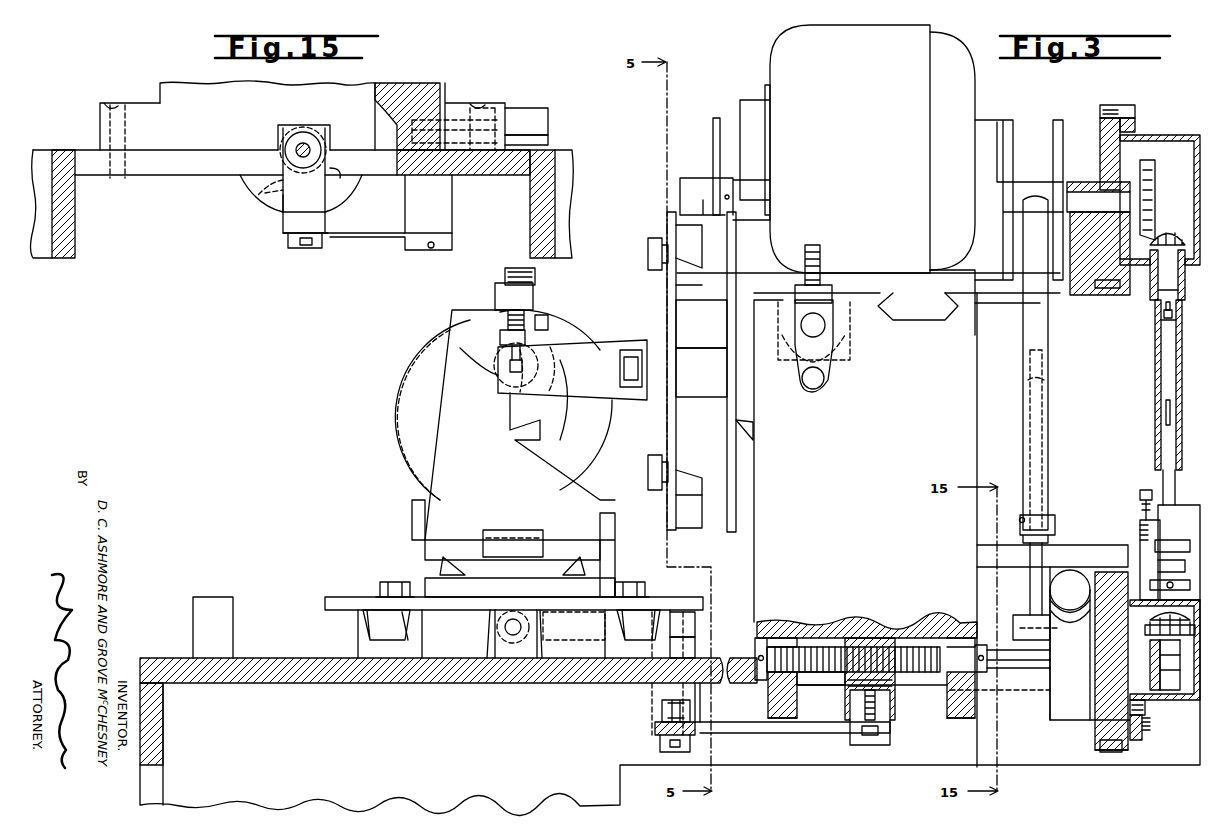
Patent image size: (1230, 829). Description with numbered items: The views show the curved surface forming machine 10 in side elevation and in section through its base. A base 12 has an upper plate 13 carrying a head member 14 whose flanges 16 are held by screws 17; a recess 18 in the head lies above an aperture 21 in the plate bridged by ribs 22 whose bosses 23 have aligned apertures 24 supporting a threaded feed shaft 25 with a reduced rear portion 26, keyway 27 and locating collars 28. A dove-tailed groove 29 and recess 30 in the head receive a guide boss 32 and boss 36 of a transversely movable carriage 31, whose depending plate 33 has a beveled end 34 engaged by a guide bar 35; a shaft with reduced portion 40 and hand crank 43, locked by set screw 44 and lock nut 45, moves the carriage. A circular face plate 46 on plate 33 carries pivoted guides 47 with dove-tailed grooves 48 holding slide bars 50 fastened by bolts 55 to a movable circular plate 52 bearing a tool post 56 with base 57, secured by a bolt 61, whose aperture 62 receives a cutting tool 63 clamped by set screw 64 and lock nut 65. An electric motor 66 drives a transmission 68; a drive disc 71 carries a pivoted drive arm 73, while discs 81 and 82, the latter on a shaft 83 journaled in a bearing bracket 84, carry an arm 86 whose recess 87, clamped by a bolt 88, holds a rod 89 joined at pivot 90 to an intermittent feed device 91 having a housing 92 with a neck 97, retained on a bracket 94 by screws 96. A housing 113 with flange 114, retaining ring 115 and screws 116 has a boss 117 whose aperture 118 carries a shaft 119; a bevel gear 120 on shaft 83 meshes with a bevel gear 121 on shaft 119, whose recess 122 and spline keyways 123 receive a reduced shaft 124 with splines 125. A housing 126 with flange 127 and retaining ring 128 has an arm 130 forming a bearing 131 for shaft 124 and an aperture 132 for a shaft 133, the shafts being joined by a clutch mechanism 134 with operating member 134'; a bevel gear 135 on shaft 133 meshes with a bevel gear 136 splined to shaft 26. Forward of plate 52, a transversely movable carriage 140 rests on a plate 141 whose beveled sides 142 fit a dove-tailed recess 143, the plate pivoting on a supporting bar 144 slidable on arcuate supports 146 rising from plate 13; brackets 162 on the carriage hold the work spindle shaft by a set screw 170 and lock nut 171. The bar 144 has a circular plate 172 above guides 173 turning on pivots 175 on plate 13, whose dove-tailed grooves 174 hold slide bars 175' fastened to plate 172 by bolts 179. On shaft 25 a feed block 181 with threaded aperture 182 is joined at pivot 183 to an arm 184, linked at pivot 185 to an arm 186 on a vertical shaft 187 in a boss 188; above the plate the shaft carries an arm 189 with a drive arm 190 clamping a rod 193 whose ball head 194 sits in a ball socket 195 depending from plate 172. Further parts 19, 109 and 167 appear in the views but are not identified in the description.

In FIG. 3, the machine 10 is at (768, 66).
In FIG. 15, the frame side wall 12 is at (570, 182).
In FIG. 15, the base plate 13 is at (436, 172).
In FIG. 3, the base plate 13 is at (605, 683).
In FIG. 15, the frame 14 is at (160, 88).
In FIG. 3, the frame 14 is at (977, 428).
In FIG. 15, the bearing block 16 is at (98, 105).
In FIG. 15, the bolt 17 is at (108, 118).
In FIG. 3, the lead screw 18 is at (825, 622).
In FIG. 15, the bearing 19 is at (312, 120).
In FIG. 15, the bracket 21 is at (330, 180).
In FIG. 3, the bracket 21 is at (905, 690).
In FIG. 15, the support 22 is at (283, 205).
In FIG. 3, the support 22 is at (778, 720).
In FIG. 15, the bearing block 23 is at (292, 125).
In FIG. 3, the bearing block 23 is at (776, 640).
In FIG. 3, the bearing cap 24 is at (795, 640).
In FIG. 3, the spacer 25 is at (812, 675).
In FIG. 15, the shaft 26 is at (304, 158).
In FIG. 3, the shaft 26 is at (1030, 672).
In FIG. 3, the coupling 27 is at (1020, 670).
In FIG. 3, the collar 28 is at (758, 680).
In FIG. 3, the bracket 29 is at (950, 318).
In FIG. 3, the pivot 30 is at (850, 348).
In FIG. 3, the motor base 31 is at (884, 290).
In FIG. 3, the bracket 32 is at (905, 320).
In FIG. 3, the plate 33 is at (755, 388).
In FIG. 3, the wedge 34 is at (753, 428).
In FIG. 3, the plate 35 is at (754, 452).
In FIG. 3, the link 36 is at (850, 368).
In FIG. 3, the link 40 is at (826, 325).
In FIG. 3, the pin 43 is at (818, 385).
In FIG. 3, the bolt 44 is at (822, 270).
In FIG. 3, the nut 45 is at (832, 296).
In FIG. 3, the plate 46 is at (757, 372).
In FIG. 3, the plate 47 is at (675, 303).
In FIG. 3, the guide 48 is at (690, 275).
In FIG. 3, the wedge 50 is at (700, 252).
In FIG. 3, the slide 52 is at (672, 438).
In FIG. 3, the bolt 55 is at (648, 258).
In FIG. 3, the arm 56 is at (580, 398).
In FIG. 3, the block 57 is at (654, 338).
In FIG. 3, the block 61 is at (623, 345).
In FIG. 3, the pin 62 is at (514, 372).
In FIG. 3, the pin 63 is at (510, 370).
In FIG. 3, the screw 64 is at (508, 322).
In FIG. 3, the nut 65 is at (500, 337).
In FIG. 3, the motor 66 is at (778, 38).
In FIG. 3, the motor end 68 is at (968, 268).
In FIG. 3, the rod 71 is at (712, 98).
In FIG. 3, the bracket 73 is at (680, 205).
In FIG. 3, the rod 81 is at (1008, 118).
In FIG. 3, the rod 82 is at (1058, 118).
In FIG. 3, the bar 83 is at (1075, 186).
In FIG. 3, the block 84 is at (1080, 290).
In FIG. 3, the shaft 86 is at (1048, 395).
In FIG. 3, the shaft bore 87 is at (1044, 360).
In FIG. 3, the collar 88 is at (1055, 525).
In FIG. 3, the shaft 89 is at (1032, 555).
In FIG. 3, the block 90 is at (1025, 604).
In FIG. 3, the housing 91 is at (1050, 705).
In FIG. 3, the housing wall 92 is at (1056, 720).
In FIG. 3, the wheel 94 is at (1095, 708).
In FIG. 3, the screw 96 is at (1112, 752).
In FIG. 3, the cylinder 97 is at (1060, 650).
In FIG. 3, the plate 109 is at (1068, 567).
In FIG. 3, the housing 113 is at (1185, 135).
In FIG. 3, the block 114 is at (1100, 130).
In FIG. 3, the bushing 115 is at (1137, 125).
In FIG. 3, the screw 116 is at (1135, 112).
In FIG. 3, the sleeve 117 is at (1185, 277).
In FIG. 3, the sleeve end 118 is at (1185, 292).
In FIG. 3, the tube 119 is at (1155, 335).
In FIG. 3, the bevel gear 120 is at (1150, 160).
In FIG. 3, the bevel gear 121 is at (1172, 230).
In FIG. 3, the pin 122 is at (1178, 328).
In FIG. 3, the slot 123 is at (1185, 313).
In FIG. 3, the shaft 124 is at (1160, 380).
In FIG. 3, the slot 125 is at (1166, 416).
In FIG. 3, the housing 126 is at (1185, 700).
In FIG. 3, the bearing 127 is at (1145, 713).
In FIG. 3, the bearing 128 is at (1142, 728).
In FIG. 3, the clutch 130 is at (1172, 543).
In FIG. 3, the housing 131 is at (1175, 505).
In FIG. 3, the spring 132 is at (1145, 586).
In FIG. 3, the gear 133 is at (1148, 632).
In FIG. 3, the lever 134 is at (1144, 572).
In FIG. 3, the knob 134' is at (1137, 493).
In FIG. 3, the gear 135 is at (1182, 672).
In FIG. 3, the gear 136 is at (1180, 690).
In FIG. 3, the platform 140 is at (425, 550).
In FIG. 3, the block 141 is at (557, 557).
In FIG. 3, the wedge 142 is at (460, 570).
In FIG. 3, the plate 143 is at (425, 578).
In FIG. 3, the column 144 is at (598, 578).
In FIG. 3, the block 146 is at (193, 611).
In FIG. 3, the column 162 is at (425, 518).
In FIG. 3, the wheel 167 is at (412, 423).
In FIG. 3, the screw 170 is at (505, 275).
In FIG. 3, the block 171 is at (495, 297).
In FIG. 3, the plate 172 is at (335, 597).
In FIG. 3, the base 173 is at (280, 683).
In FIG. 3, the support 174 is at (405, 628).
In FIG. 3, the foot 175 is at (635, 634).
In FIG. 3, the foot 175' is at (370, 625).
In FIG. 3, the bolt 179 is at (380, 587).
In FIG. 15, the bolt 181 is at (265, 194).
In FIG. 3, the bolt 181 is at (862, 710).
In FIG. 3, the nut 182 is at (870, 638).
In FIG. 15, the foot 183 is at (288, 236).
In FIG. 3, the foot 183 is at (866, 745).
In FIG. 15, the bar 184 is at (320, 222).
In FIG. 3, the bar 184 is at (818, 733).
In FIG. 15, the foot 185 is at (300, 242).
In FIG. 3, the foot 185 is at (664, 752).
In FIG. 15, the nut 186 is at (363, 233).
In FIG. 3, the nut 186 is at (655, 738).
In FIG. 3, the bolt 187 is at (655, 700).
In FIG. 15, the bar 188 is at (406, 207).
In FIG. 3, the bar 188 is at (700, 704).
In FIG. 15, the block 189 is at (548, 140).
In FIG. 3, the block 189 is at (695, 638).
In FIG. 15, the block 190 is at (548, 118).
In FIG. 3, the block 190 is at (695, 617).
In FIG. 3, the block 193 is at (545, 642).
In FIG. 3, the pin 194 is at (497, 623).
In FIG. 3, the support 195 is at (497, 645).